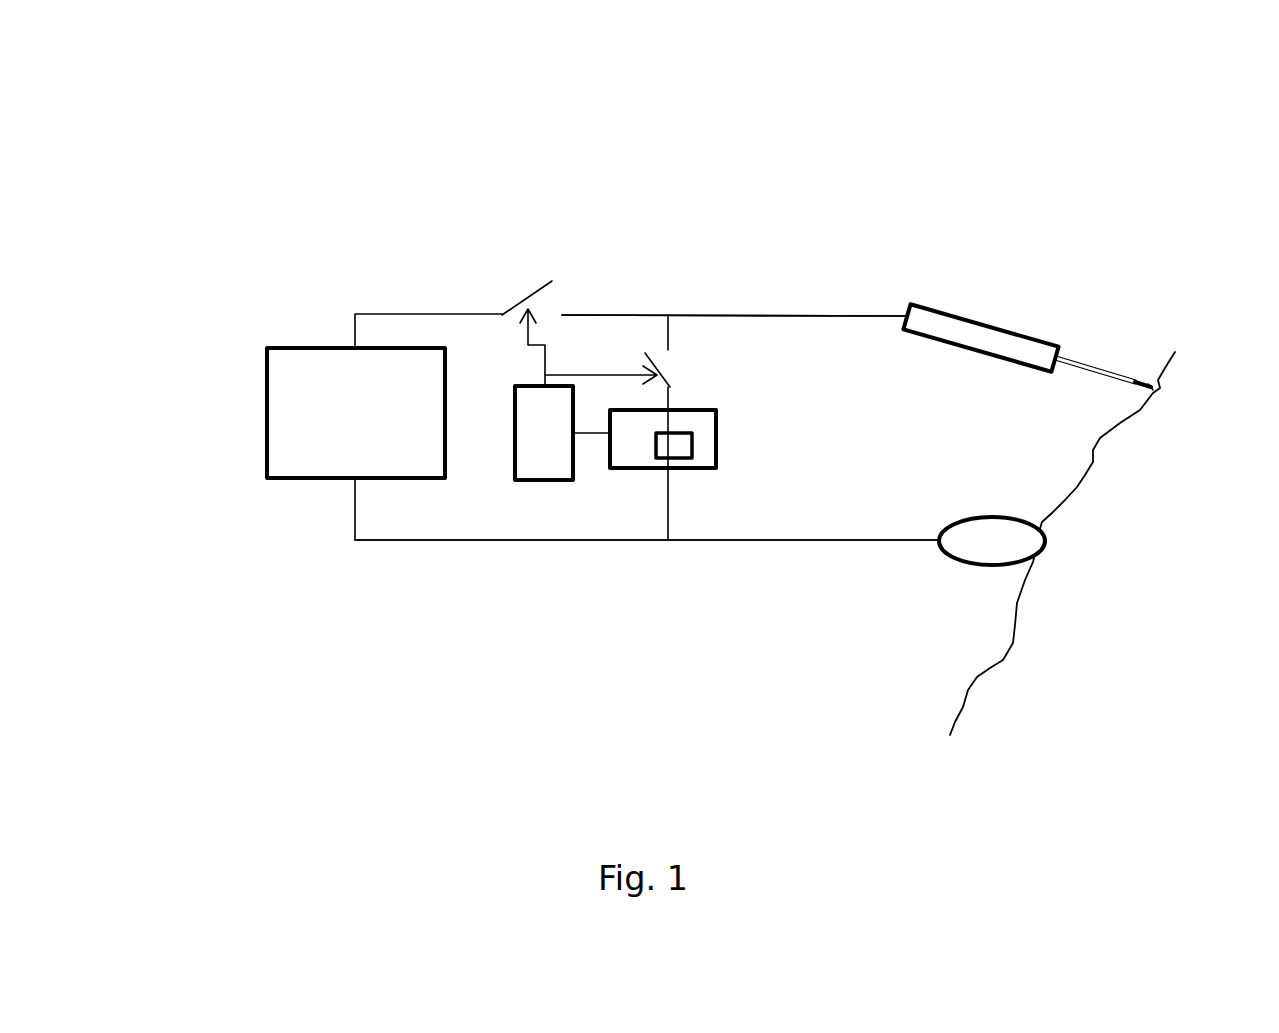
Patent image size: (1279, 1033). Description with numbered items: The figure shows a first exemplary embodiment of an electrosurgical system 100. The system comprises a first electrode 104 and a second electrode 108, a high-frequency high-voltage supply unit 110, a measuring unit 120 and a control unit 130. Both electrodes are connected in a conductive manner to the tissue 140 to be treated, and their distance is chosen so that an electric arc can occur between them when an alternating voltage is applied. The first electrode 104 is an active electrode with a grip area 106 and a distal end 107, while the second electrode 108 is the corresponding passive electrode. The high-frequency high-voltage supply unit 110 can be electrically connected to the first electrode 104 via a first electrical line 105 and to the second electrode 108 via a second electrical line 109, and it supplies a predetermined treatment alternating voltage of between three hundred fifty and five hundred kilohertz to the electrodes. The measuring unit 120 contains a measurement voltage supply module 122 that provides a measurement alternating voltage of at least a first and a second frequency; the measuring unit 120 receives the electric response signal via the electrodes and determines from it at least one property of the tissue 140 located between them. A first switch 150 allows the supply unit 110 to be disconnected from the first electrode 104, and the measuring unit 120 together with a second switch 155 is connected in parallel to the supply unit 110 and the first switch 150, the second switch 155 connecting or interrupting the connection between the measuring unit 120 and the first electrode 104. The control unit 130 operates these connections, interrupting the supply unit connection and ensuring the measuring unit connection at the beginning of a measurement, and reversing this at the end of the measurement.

The electrosurgical system 100 is at (193, 200).
The first electrode 104 is at (1148, 377).
The first electrical line 105 is at (823, 316).
The grip area 106 is at (970, 335).
The distal end 107 is at (1124, 344).
The second electrode 108 is at (963, 552).
The second electrical line 109 is at (793, 542).
The high-frequency high-voltage supply unit 110 is at (302, 413).
The measuring unit 120 is at (707, 422).
The measurement voltage supply module 122 is at (680, 448).
The control unit 130 is at (550, 463).
The tissue 140 is at (1093, 463).
The first switch 150 is at (527, 302).
The second switch 155 is at (648, 352).